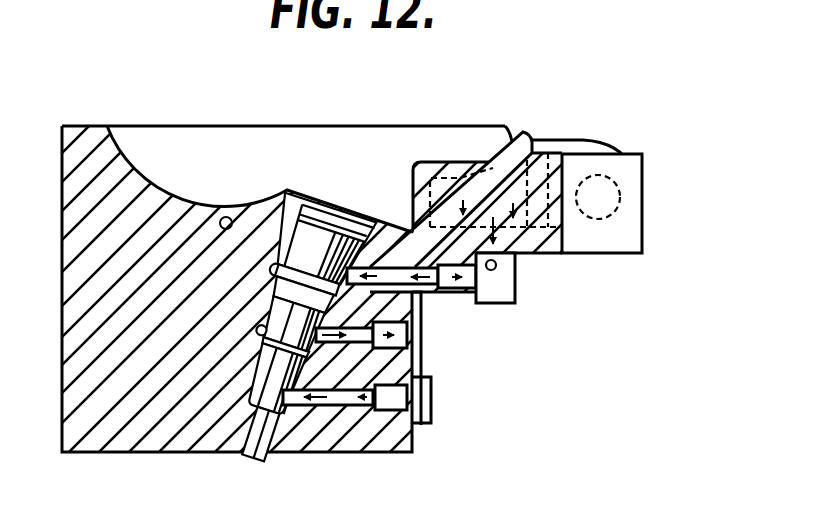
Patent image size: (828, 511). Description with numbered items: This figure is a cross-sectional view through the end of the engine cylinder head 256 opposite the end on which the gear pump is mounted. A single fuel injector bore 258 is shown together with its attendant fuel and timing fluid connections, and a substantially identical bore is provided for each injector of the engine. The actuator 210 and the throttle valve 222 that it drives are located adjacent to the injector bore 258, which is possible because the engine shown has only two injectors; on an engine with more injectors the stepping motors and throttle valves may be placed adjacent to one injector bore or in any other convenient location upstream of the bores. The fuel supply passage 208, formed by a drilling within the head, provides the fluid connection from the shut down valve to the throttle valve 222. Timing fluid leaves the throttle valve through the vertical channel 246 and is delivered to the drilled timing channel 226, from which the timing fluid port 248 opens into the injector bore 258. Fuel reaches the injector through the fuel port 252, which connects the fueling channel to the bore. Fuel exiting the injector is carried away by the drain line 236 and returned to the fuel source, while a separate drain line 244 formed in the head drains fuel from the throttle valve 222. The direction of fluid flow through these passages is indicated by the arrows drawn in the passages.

The fuel supply passage 208 is at (403, 217).
The actuator 210 is at (538, 153).
The throttle valve 222 is at (627, 175).
The timing channel 226 is at (418, 287).
The drain line 236 is at (350, 341).
The drain line 244 is at (543, 252).
The vertical channel 246 is at (497, 268).
The timing fluid port 248 is at (483, 297).
The fuel port 252 is at (432, 400).
The cylinder head 256 is at (160, 282).
The fuel injector bore 258 is at (272, 262).